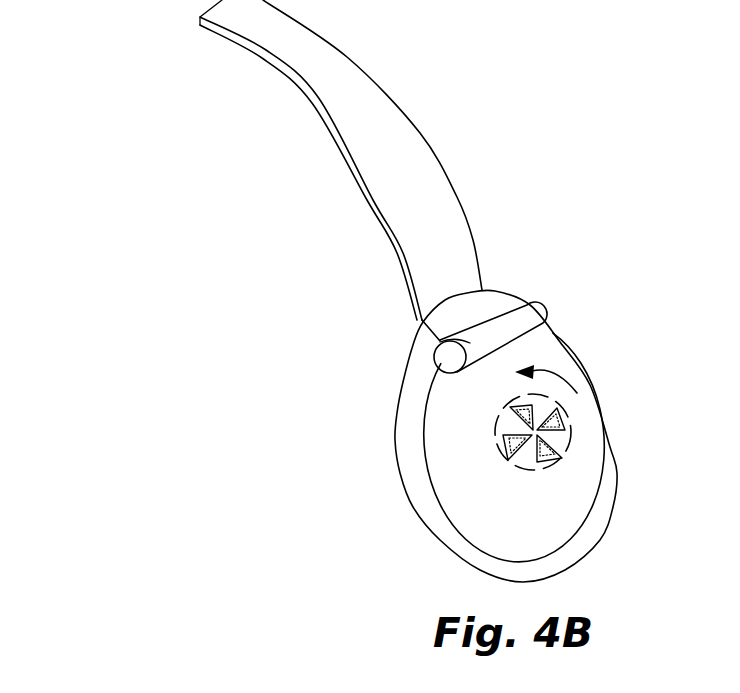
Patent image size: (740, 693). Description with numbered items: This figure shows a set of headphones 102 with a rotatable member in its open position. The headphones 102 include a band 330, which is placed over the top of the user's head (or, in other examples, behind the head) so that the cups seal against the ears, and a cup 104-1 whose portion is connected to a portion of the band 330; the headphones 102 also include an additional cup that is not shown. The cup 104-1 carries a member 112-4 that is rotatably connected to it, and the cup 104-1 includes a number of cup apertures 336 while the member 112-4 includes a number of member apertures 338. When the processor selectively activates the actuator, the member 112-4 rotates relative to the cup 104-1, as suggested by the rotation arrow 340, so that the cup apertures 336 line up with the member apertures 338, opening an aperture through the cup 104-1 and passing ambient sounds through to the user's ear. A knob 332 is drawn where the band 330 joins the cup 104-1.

The headphones 102 is at (113, 56).
The band 330 is at (359, 136).
The hinge knob 332 is at (422, 321).
The cup 104-1 is at (405, 383).
The rotation direction 340 is at (546, 375).
The cup apertures 336 is at (513, 412).
The member apertures 338 is at (566, 420).
The member 112-4 is at (573, 438).